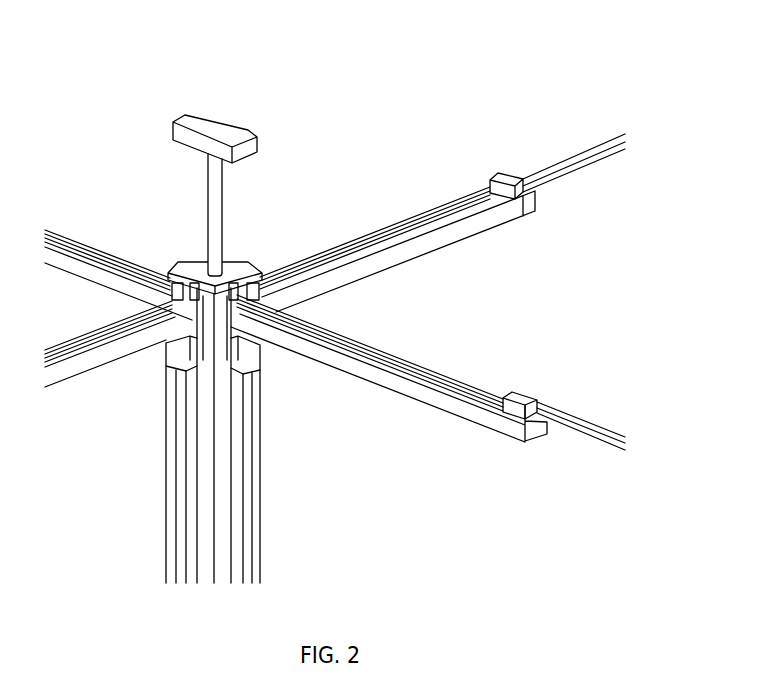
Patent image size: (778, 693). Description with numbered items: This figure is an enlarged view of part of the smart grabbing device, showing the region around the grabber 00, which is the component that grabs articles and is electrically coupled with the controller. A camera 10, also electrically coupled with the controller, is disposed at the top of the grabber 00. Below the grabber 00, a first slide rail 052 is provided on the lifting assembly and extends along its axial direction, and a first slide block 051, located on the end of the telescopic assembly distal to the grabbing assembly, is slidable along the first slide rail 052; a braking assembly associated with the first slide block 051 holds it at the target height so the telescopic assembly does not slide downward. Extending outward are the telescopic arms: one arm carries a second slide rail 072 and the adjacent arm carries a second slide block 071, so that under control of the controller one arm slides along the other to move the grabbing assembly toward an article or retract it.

The camera 10 is at (208, 138).
The grabber 00 is at (242, 272).
The second slide rail 072 is at (372, 352).
The second slide block 071 is at (528, 403).
The first slide block 051 is at (247, 350).
The first slide rail 052 is at (248, 445).